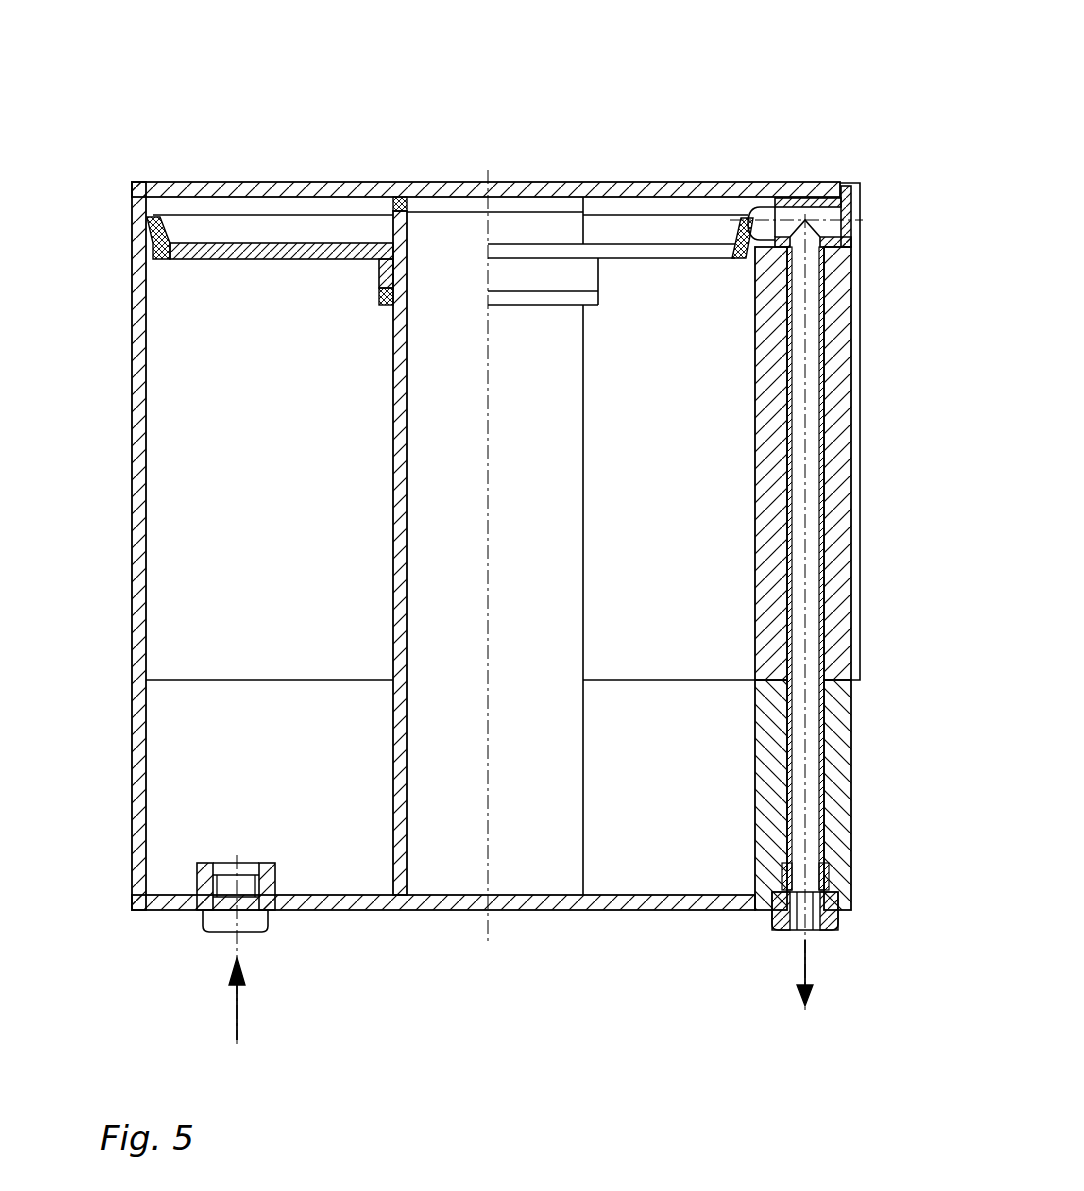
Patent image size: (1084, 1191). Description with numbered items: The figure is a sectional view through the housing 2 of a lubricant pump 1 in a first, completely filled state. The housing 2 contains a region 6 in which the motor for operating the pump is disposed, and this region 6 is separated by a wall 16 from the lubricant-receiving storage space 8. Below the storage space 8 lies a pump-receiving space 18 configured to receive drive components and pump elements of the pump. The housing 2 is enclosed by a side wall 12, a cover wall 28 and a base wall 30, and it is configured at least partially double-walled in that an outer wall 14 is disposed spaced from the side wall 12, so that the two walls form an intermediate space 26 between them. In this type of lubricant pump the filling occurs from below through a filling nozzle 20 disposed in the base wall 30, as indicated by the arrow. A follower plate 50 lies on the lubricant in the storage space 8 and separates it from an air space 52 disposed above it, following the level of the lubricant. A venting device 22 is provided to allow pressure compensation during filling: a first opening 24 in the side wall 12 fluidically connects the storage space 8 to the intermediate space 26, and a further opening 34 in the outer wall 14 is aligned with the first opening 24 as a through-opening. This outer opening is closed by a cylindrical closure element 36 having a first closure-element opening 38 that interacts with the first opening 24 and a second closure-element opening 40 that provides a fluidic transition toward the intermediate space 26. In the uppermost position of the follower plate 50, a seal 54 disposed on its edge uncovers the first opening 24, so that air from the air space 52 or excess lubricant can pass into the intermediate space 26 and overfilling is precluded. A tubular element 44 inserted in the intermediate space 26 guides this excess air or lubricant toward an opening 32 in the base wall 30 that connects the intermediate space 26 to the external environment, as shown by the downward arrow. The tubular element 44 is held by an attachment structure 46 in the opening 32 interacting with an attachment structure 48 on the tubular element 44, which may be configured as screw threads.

The lubricant pump 1 is at (432, 34).
The housing 2 is at (212, 180).
The region 6 is at (457, 412).
The storage space 8 is at (260, 458).
The side wall 12 is at (133, 522).
The outer wall 14 is at (856, 647).
The wall 16 is at (396, 484).
The pump-receiving space 18 is at (242, 808).
The filling nozzle 20 is at (210, 908).
The venting device 22 is at (870, 259).
The first opening 24 is at (750, 205).
The intermediate space 26 is at (750, 280).
The cover wall 28 is at (356, 192).
The base wall 30 is at (520, 908).
The opening 32 is at (773, 912).
The further opening 34 is at (843, 197).
The closure element 36 is at (851, 235).
The first closure-element opening 38 is at (794, 198).
The second closure-element opening 40 is at (812, 248).
The tubular element 44 is at (852, 515).
The attachment structure 46 is at (833, 890).
The attachment structure 48 is at (840, 932).
The follower plate 50 is at (240, 262).
The air space 52 is at (279, 232).
The seal 54 is at (149, 252).